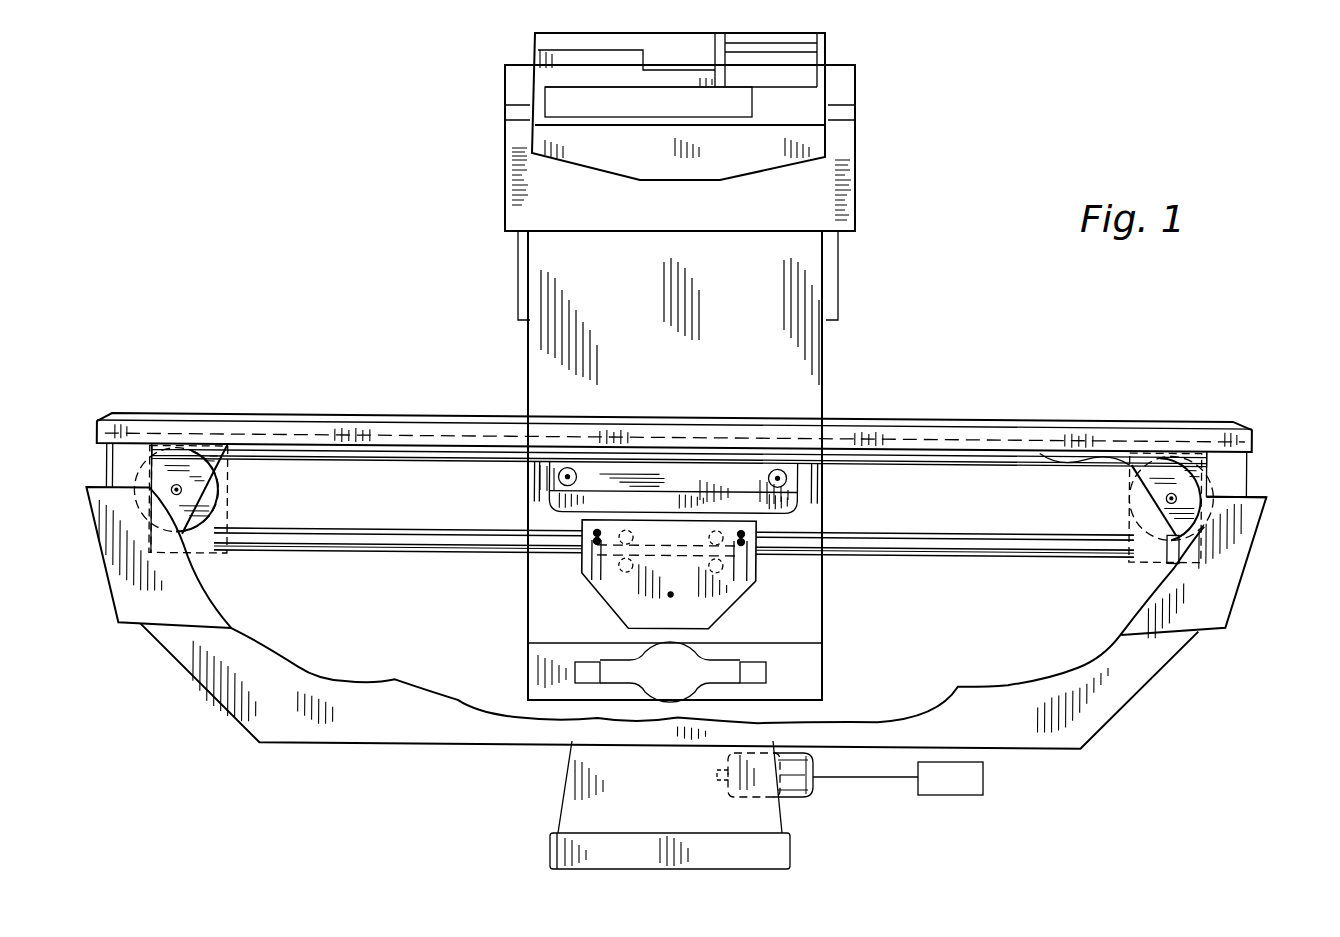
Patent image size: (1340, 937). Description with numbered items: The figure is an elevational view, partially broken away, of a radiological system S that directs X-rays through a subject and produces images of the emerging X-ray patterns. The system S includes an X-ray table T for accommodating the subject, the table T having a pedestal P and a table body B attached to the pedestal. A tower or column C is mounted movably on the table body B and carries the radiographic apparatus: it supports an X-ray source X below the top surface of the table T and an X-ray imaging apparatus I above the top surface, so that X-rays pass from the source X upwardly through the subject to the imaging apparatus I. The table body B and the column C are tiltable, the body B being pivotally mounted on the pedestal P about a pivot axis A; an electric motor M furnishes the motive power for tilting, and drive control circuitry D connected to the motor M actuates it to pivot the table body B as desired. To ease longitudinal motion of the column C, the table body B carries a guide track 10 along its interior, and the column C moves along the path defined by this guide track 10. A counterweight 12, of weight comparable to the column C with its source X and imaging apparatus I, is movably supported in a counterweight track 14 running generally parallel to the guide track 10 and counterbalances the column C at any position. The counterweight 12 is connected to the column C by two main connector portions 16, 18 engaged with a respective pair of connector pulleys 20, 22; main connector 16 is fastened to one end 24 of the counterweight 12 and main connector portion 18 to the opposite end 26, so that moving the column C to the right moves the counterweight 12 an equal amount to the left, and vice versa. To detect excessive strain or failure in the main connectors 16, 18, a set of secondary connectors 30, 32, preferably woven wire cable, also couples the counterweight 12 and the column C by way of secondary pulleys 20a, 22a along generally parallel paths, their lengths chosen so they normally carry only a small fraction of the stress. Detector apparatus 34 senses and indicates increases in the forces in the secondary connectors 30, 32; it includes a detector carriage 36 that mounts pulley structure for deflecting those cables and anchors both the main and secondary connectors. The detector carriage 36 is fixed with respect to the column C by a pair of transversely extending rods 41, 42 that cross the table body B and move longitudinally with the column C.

The guide track 10 is at (459, 434).
The counterweight 12 is at (758, 588).
The counterweight track 14 is at (920, 562).
The main connector portion 16 is at (505, 527).
The main connector portion 18 is at (836, 533).
The connector pulley 20 is at (220, 481).
The secondary pulley 20a is at (228, 489).
The connector pulley 22 is at (1130, 502).
The secondary pulley 22a is at (1121, 502).
The end of counterweight 24 is at (587, 573).
The opposite end of counterweight 26 is at (752, 553).
The secondary connector portion 30 is at (507, 550).
The secondary connector portion 32 is at (835, 551).
The detector apparatus 34 is at (666, 430).
The detector carriage 36 is at (822, 462).
The rod 41 is at (558, 476).
The rod 42 is at (790, 478).
The pivot axis A is at (672, 590).
The table body B is at (198, 683).
The tower or column C is at (823, 352).
The drive control circuitry D is at (950, 778).
The X-ray imaging apparatus I is at (855, 140).
The electric motor M is at (815, 765).
The pedestal P is at (562, 785).
The radiological system S is at (918, 384).
The X-ray table T is at (1256, 553).
The X-ray source X is at (702, 643).